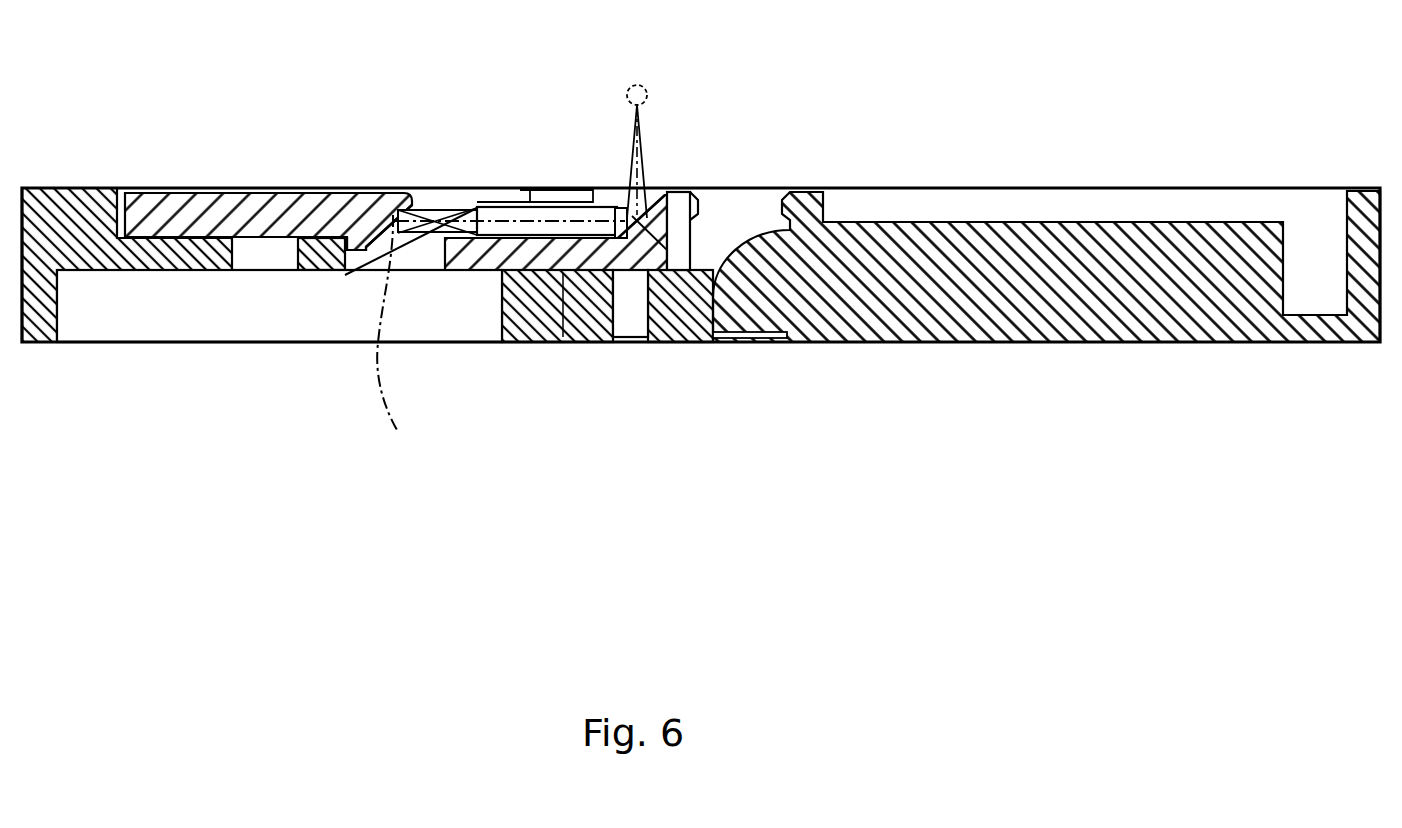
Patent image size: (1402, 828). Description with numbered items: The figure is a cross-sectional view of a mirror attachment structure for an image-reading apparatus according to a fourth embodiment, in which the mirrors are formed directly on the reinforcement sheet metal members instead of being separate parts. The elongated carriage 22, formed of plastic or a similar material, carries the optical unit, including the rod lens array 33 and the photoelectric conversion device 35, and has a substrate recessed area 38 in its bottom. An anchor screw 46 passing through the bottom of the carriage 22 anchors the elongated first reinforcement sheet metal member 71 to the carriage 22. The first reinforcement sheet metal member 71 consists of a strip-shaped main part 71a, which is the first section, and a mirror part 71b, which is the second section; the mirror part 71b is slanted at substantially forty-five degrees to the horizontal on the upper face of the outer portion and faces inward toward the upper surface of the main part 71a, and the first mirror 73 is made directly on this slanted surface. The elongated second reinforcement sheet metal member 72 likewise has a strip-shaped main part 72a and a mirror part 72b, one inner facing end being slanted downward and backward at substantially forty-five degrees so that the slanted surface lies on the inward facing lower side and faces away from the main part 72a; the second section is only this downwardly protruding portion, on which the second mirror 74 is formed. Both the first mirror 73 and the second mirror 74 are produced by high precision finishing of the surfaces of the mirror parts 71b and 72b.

The carriage 22 is at (1052, 345).
The rod lens array 33 is at (548, 213).
The photoelectric conversion device 35 is at (399, 349).
The substrate recessed area 38 is at (170, 318).
The anchor screw 46 is at (637, 327).
The first reinforcement sheet metal member 71 is at (411, 270).
The main part 71a is at (550, 338).
The mirror part 71b is at (672, 187).
The second reinforcement sheet metal member 72 is at (296, 129).
The main part 72a is at (205, 190).
The mirror part 72b is at (385, 190).
The first mirror 73 is at (655, 200).
The second mirror 74 is at (412, 205).